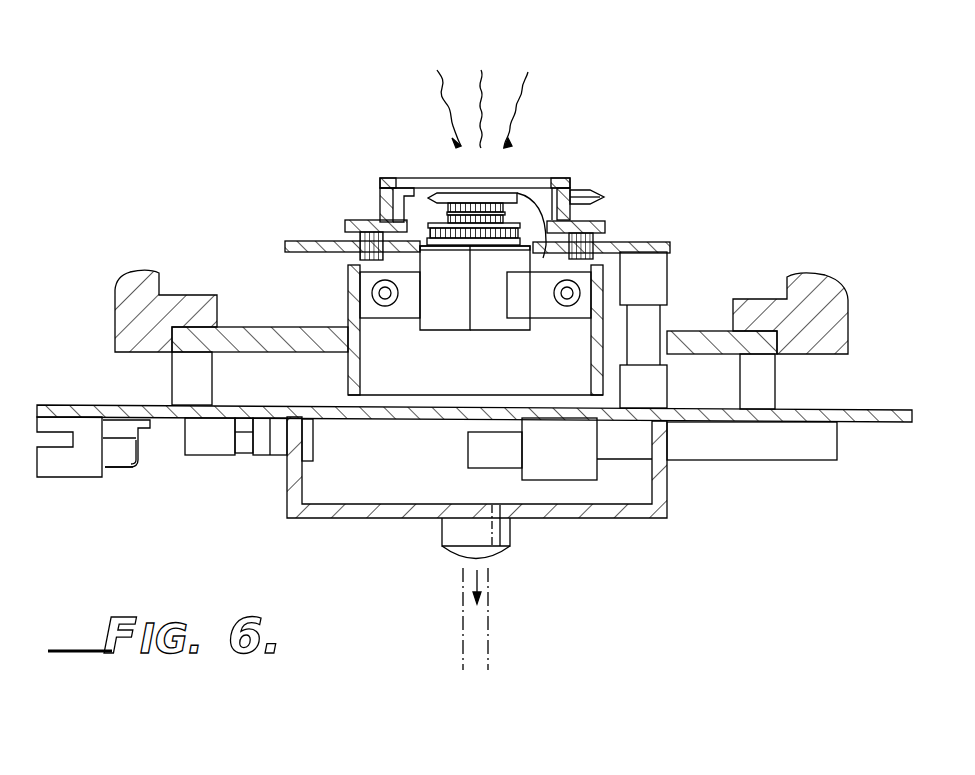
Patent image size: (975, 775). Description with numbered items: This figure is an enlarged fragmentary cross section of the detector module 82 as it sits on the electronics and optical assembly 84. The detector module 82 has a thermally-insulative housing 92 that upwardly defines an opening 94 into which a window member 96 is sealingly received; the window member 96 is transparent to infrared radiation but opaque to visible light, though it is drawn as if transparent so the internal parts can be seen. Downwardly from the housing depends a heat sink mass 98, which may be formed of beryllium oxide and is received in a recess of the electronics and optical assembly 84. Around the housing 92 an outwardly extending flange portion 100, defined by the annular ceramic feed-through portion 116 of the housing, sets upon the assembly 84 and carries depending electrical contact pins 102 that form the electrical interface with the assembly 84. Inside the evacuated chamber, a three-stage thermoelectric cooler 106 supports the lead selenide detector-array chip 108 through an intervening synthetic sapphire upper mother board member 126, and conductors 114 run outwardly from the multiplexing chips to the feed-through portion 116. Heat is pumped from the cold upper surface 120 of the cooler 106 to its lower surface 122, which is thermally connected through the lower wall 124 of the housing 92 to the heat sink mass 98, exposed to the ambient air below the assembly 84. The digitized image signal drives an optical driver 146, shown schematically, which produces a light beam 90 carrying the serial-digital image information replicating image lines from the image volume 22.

The image volume 22 is at (482, 96).
The detector module 82 is at (598, 166).
The electronics and optical assembly 84 is at (625, 525).
The light beam 90 is at (497, 620).
The thermally-insulative housing 92 is at (570, 183).
The opening 94 is at (545, 182).
The window member 96 is at (515, 178).
The heat sink mass 98 is at (525, 320).
The flange portion 100 is at (603, 223).
The electrical contact pins 102 is at (345, 228).
The three-stage thermoelectric cooler 106 is at (424, 213).
The detector-array chip 108 is at (467, 191).
The conductors 114 is at (432, 195).
The annular ceramic feed-through portion 116 is at (393, 212).
The upper surface 120 is at (480, 205).
The lower surface 122 is at (475, 252).
The lower wall 124 is at (435, 252).
The upper mother board member 126 is at (432, 213).
The optical driver 146 is at (442, 530).